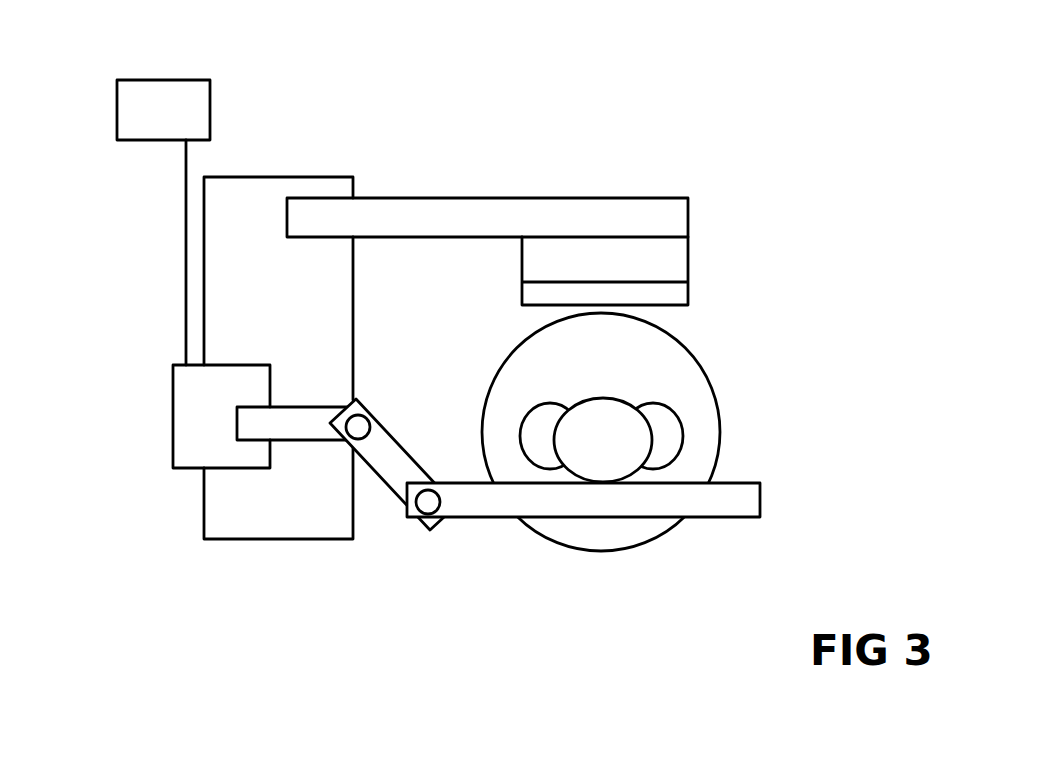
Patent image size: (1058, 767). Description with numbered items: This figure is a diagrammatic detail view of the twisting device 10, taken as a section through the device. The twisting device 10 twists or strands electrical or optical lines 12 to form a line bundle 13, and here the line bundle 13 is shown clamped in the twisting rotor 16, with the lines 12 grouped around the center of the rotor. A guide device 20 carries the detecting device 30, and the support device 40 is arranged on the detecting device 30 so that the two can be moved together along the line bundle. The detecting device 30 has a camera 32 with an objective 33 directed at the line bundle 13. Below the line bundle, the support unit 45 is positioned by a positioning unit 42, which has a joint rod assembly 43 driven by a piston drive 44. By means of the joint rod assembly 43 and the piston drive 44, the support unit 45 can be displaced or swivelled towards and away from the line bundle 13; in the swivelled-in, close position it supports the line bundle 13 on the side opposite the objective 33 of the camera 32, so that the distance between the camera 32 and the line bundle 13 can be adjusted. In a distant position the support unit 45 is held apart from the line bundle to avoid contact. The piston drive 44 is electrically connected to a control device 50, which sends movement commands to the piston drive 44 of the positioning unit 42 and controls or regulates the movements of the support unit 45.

The twisting device 10 is at (86, 90).
The lines 12 is at (670, 440).
The line bundle 13 is at (617, 425).
The twisting rotor 16 is at (672, 354).
The guide device 20 is at (268, 166).
The detecting device 30 is at (530, 191).
The camera 32 is at (677, 248).
The objective 33 is at (677, 293).
The support device 40 is at (554, 531).
The positioning unit 42 is at (233, 473).
The joint rod assembly 43 is at (322, 470).
The piston drive 44 is at (184, 380).
The support unit 45 is at (737, 507).
The control device 50 is at (197, 104).